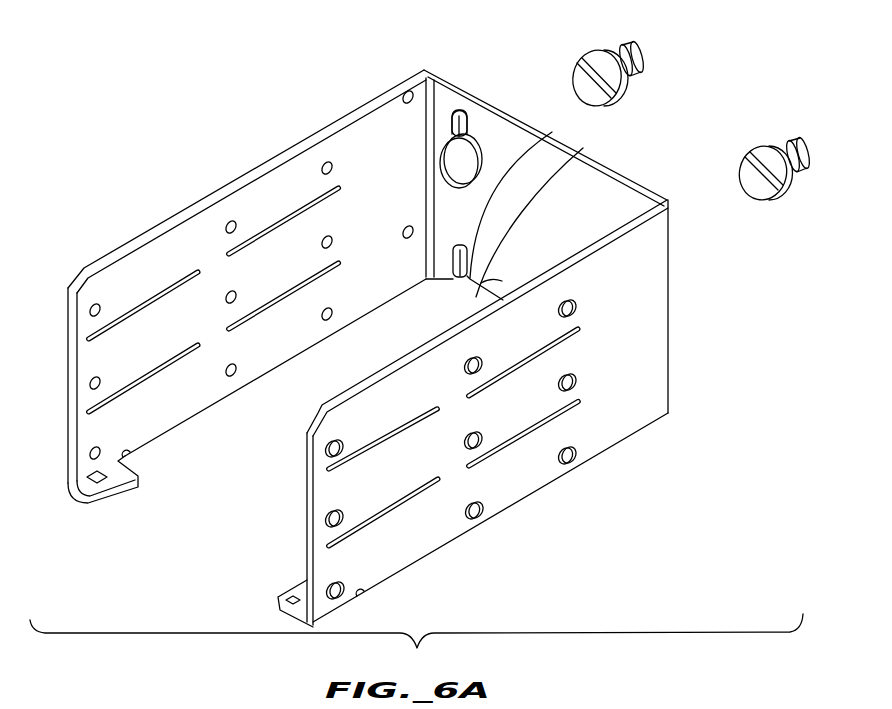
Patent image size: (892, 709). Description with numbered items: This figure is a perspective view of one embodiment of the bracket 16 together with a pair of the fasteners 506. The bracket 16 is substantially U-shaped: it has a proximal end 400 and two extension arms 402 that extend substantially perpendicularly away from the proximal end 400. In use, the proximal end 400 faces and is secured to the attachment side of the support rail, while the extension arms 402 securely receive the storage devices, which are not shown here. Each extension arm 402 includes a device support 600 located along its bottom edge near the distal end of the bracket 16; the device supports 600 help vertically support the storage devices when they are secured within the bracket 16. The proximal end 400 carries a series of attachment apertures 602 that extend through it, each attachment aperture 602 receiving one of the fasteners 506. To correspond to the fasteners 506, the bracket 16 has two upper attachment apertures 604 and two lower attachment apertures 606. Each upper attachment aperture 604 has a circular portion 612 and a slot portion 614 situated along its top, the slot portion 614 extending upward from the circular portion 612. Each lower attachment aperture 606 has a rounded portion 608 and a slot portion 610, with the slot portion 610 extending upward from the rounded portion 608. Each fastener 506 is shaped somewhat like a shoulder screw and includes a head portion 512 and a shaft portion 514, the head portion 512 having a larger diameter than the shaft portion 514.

The bracket 16 is at (236, 140).
The proximal end 400 is at (477, 287).
The extension arm 402 is at (207, 190).
The fastener 506 is at (585, 50).
The head portion 512 is at (758, 200).
The shaft portion 514 is at (760, 145).
The device support 600 is at (90, 500).
The attachment aperture 602 is at (351, 160).
The upper attachment aperture 604 is at (447, 128).
The lower attachment aperture 606 is at (447, 248).
The rounded portion 608 is at (583, 148).
The slot portion 610 is at (552, 132).
The circular portion 612 is at (474, 140).
The slot portion 614 is at (460, 112).